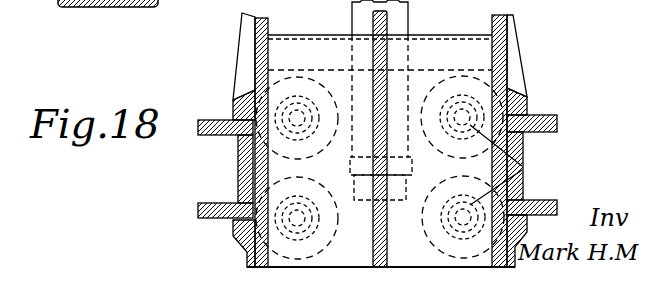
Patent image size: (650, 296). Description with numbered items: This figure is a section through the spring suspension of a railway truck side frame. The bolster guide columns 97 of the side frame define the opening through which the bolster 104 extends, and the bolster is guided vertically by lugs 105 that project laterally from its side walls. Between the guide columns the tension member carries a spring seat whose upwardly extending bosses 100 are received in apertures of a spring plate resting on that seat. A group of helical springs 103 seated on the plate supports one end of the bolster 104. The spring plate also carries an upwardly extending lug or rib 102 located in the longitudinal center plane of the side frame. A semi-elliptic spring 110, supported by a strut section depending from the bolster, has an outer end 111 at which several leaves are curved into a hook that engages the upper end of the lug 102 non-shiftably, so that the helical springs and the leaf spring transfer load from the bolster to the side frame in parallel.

The bolster guide columns 97 is at (558, 120).
The bosses 100 is at (537, 162).
The lug or rib 102 is at (349, 166).
The helical springs 103 is at (268, 183).
The bolster 104 is at (251, 267).
The lugs 105 is at (233, 104).
The semi-elliptic spring 110 is at (357, 16).
The outer end 111 is at (363, 202).